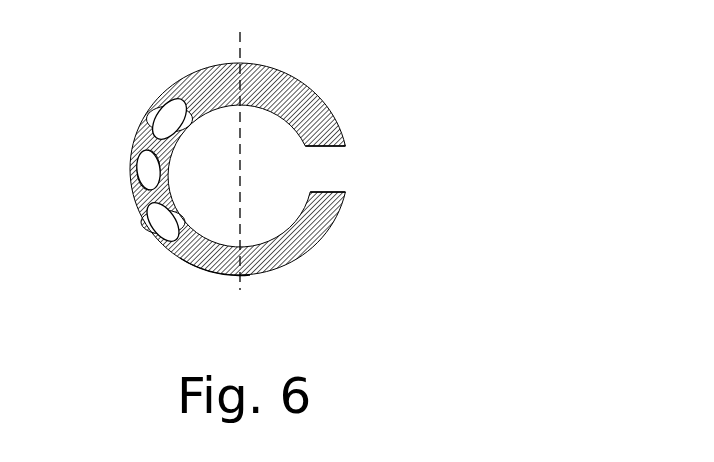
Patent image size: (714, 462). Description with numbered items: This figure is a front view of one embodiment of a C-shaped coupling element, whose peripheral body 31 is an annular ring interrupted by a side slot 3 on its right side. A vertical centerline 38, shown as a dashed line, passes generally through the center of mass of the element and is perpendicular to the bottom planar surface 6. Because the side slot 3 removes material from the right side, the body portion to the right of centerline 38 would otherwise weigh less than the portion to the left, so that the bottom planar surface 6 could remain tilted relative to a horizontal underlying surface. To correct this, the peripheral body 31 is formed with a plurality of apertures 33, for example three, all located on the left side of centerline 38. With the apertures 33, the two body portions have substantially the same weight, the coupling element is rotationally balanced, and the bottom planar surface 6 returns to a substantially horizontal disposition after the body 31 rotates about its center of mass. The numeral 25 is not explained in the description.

The valve ring 25 is at (273, 152).
The peripheral body 31 is at (272, 86).
The apertures 33 is at (147, 167).
The side slot 3 is at (345, 168).
The vertical centerline 38 is at (237, 45).
The bottom planar surface 6 is at (151, 267).